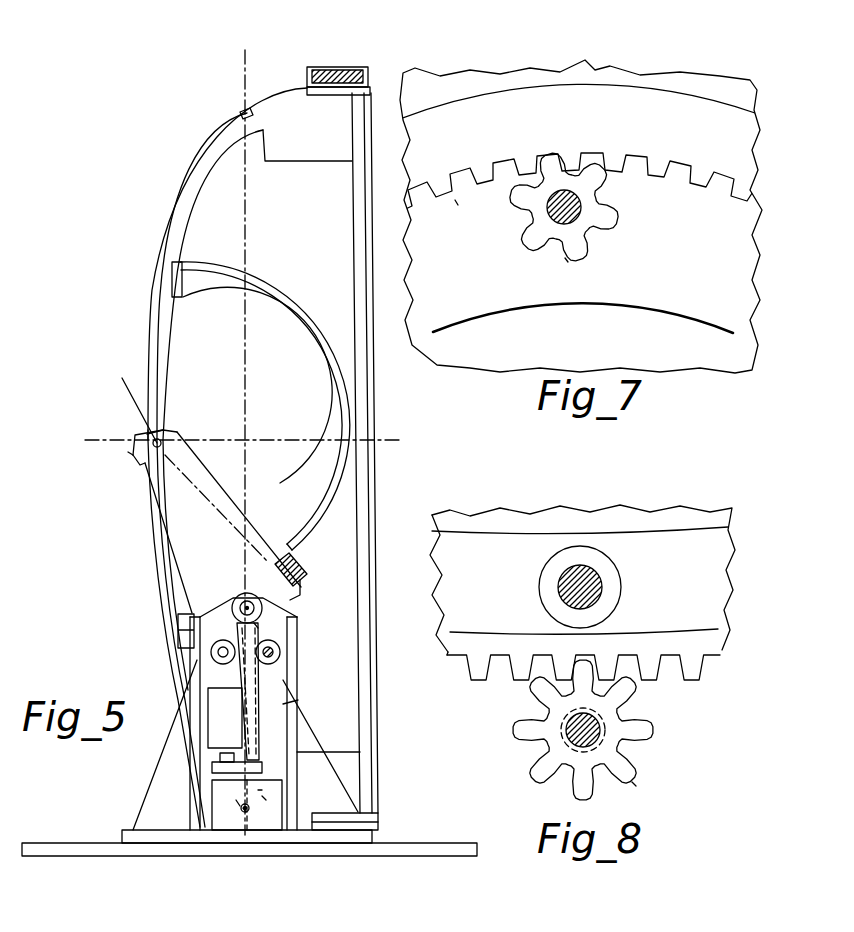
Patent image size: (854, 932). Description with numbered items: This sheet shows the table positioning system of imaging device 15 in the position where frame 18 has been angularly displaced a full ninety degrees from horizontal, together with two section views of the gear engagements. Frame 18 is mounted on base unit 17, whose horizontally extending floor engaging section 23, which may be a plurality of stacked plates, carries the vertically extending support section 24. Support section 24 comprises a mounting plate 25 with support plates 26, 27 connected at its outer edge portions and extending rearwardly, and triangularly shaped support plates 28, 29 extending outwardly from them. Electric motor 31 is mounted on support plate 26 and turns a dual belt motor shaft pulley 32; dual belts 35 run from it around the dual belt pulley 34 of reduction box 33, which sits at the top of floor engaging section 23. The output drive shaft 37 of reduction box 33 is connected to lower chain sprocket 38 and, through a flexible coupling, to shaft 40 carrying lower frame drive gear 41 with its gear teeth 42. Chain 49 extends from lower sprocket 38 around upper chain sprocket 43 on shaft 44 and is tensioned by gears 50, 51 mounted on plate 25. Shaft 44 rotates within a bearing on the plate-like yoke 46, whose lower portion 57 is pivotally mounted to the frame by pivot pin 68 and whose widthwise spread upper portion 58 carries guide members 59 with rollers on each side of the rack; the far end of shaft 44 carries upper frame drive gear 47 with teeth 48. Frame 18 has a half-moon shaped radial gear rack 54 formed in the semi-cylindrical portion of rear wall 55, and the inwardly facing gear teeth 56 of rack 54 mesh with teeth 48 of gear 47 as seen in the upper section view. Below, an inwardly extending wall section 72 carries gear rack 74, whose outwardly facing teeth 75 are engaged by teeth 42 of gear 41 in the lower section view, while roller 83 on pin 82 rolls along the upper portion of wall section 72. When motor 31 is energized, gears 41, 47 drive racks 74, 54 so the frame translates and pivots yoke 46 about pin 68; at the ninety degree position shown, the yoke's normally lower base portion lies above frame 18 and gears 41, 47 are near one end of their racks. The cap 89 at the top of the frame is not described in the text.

In FIG. 5, the imaging device 15 is at (108, 213).
In FIG. 5, the base unit 17 is at (443, 843).
In FIG. 5, the frame 18 is at (283, 88).
In FIG. 8, the frame 18 is at (692, 540).
In FIG. 5, the floor engaging section 23 is at (70, 856).
In FIG. 5, the support section 24 is at (300, 670).
In FIG. 5, the mounting plate 25 is at (292, 703).
In FIG. 5, the support plate 26 is at (200, 792).
In FIG. 5, the support plate 27 is at (300, 715).
In FIG. 5, the triangularly shaped support plate 28 is at (173, 754).
In FIG. 5, the triangularly shaped support plate 29 is at (333, 783).
In FIG. 5, the electric motor 31 is at (212, 734).
In FIG. 5, the dual belt motor shaft pulley 32 is at (212, 768).
In FIG. 5, the reduction box 33 is at (262, 790).
In FIG. 5, the dual belt pulley 34 is at (263, 800).
In FIG. 5, the dual belts 35 is at (243, 803).
In FIG. 5, the output drive shaft 37 is at (243, 809).
In FIG. 5, the lower chain sprocket 38 is at (245, 820).
In FIG. 8, the shaft 40 is at (550, 744).
In FIG. 8, the lower frame drive gear 41 is at (628, 752).
In FIG. 8, the gear teeth 42 is at (636, 786).
In FIG. 5, the upper chain sprocket 43 is at (298, 594).
In FIG. 5, the shaft 44 is at (236, 605).
In FIG. 7, the shaft 44 is at (522, 236).
In FIG. 5, the yoke 46 is at (190, 460).
In FIG. 7, the upper frame drive gear 47 is at (600, 199).
In FIG. 7, the teeth 48 is at (565, 259).
In FIG. 5, the chain 49 is at (260, 724).
In FIG. 5, the gear 50 is at (212, 656).
In FIG. 5, the gear 51 is at (282, 650).
In FIG. 5, the radial gear rack 54 is at (274, 302).
In FIG. 7, the radial gear rack 54 is at (515, 152).
In FIG. 5, the rear wall 55 is at (262, 234).
In FIG. 7, the rear wall 55 is at (590, 92).
In FIG. 5, the gear teeth 56 is at (198, 295).
In FIG. 7, the gear teeth 56 is at (478, 212).
In FIG. 5, the lower portion 57 is at (188, 434).
In FIG. 5, the upper portion 58 is at (258, 552).
In FIG. 5, the guide members 59 is at (316, 532).
In FIG. 5, the pivot pin 68 is at (136, 470).
In FIG. 8, the wall section 72 is at (698, 630).
In FIG. 5, the gear rack 74 is at (190, 158).
In FIG. 8, the gear rack 74 is at (688, 662).
In FIG. 5, the teeth 75 is at (232, 115).
In FIG. 8, the teeth 75 is at (487, 677).
In FIG. 8, the pin 82 is at (560, 585).
In FIG. 8, the roller 83 is at (620, 568).
In FIG. 5, the cap 89 is at (345, 65).